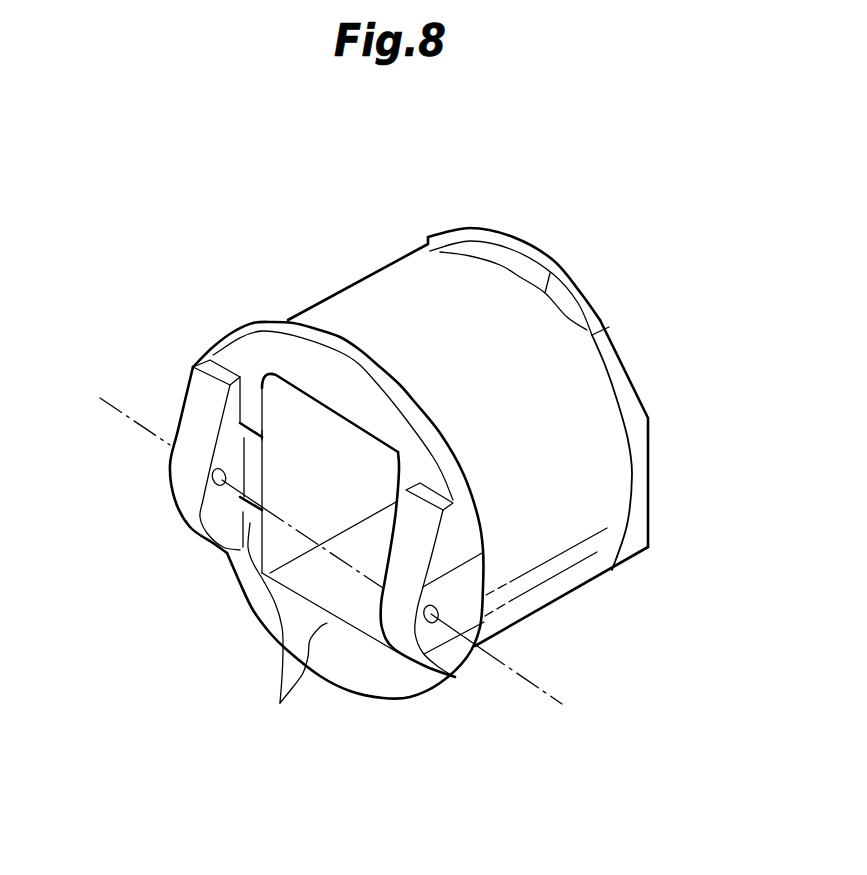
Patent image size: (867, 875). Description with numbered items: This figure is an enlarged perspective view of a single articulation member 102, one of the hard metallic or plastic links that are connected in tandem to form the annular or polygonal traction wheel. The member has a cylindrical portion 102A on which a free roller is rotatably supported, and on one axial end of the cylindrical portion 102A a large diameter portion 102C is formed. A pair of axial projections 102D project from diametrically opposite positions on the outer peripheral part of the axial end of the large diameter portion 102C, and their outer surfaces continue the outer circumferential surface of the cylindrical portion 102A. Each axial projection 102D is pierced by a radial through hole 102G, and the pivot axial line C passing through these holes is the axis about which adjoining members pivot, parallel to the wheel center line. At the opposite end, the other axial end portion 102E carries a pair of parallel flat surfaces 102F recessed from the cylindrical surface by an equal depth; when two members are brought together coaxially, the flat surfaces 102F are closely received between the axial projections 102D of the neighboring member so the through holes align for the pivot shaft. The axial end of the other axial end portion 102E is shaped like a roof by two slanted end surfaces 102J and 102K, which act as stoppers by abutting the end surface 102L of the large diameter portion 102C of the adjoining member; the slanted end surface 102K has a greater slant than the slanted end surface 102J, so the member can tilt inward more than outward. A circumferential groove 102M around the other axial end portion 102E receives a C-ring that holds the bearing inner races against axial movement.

The articulation member 102 is at (511, 215).
The cylindrical portion 102A is at (509, 292).
The large diameter portion 102C is at (316, 328).
The axial projections 102D is at (183, 467).
The other axial end portion 102E is at (590, 312).
The flat surfaces 102F is at (627, 374).
The through holes 102G is at (220, 480).
The slanted end surface 102J is at (650, 513).
The slanted end surface 102K is at (647, 402).
The end surface 102L is at (307, 367).
The circumferential groove 102M is at (550, 274).
The pivot axial line C is at (343, 565).